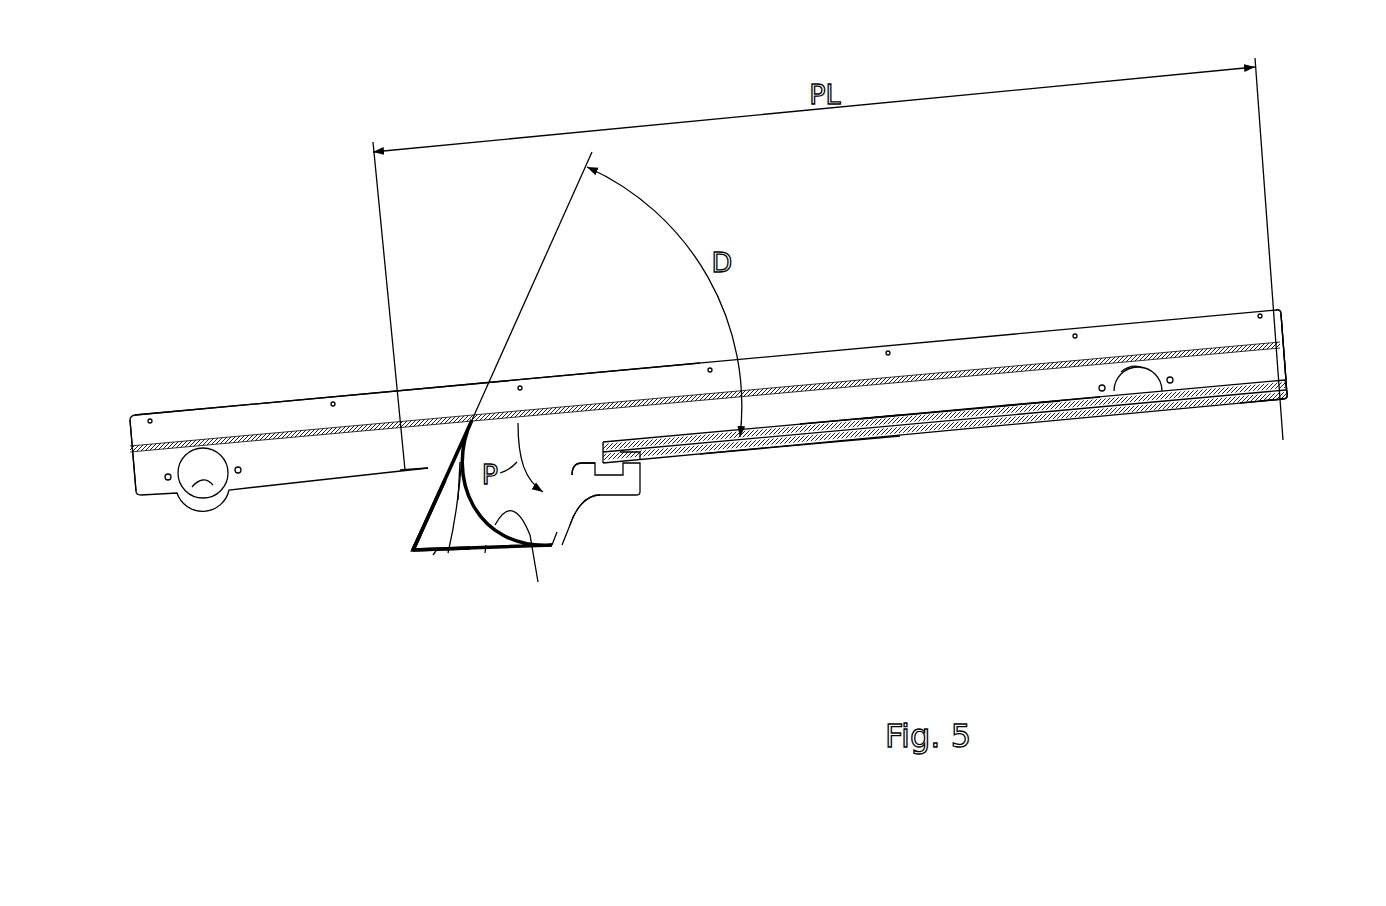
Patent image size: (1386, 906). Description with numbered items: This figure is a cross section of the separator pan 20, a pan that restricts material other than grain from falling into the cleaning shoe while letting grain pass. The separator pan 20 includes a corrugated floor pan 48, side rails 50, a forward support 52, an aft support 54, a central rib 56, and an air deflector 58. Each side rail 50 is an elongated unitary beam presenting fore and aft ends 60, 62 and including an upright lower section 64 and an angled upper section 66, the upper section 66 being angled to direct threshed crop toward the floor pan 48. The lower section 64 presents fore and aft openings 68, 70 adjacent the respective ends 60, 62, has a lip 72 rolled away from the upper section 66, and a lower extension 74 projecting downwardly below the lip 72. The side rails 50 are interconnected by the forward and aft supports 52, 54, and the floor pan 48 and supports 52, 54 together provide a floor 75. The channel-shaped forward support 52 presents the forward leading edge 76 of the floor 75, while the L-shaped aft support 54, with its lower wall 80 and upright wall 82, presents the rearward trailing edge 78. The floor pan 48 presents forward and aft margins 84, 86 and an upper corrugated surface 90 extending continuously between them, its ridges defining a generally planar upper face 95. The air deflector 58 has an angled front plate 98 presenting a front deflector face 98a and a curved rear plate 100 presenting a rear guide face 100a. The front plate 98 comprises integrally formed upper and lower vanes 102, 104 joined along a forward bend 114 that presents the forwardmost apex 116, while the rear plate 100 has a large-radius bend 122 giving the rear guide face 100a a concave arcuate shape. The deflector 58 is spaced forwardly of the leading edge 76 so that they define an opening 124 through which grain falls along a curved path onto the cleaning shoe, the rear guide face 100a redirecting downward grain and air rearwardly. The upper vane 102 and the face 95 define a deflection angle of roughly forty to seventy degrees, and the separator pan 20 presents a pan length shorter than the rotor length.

The separator pan 20 is at (1070, 171).
The corrugated floor pan 48 is at (948, 430).
The side rails 50 is at (770, 372).
The forward support 52 is at (618, 493).
The aft support 54 is at (1278, 400).
The central rib 56 is at (903, 420).
The air deflector 58 is at (420, 516).
The fore end 60 is at (128, 472).
The aft end 62 is at (1286, 323).
The upright lower section 64 is at (283, 457).
The angled upper section 66 is at (277, 412).
The fore opening 68 is at (205, 490).
The aft opening 70 is at (1137, 370).
The lip 72 is at (828, 445).
The lower extension 74 is at (552, 515).
The floor 75 is at (1035, 412).
The forward leading edge 76 is at (567, 512).
The rearward trailing edge 78 is at (1290, 360).
The lower wall 80 is at (1287, 400).
The upright wall 82 is at (1290, 378).
The forward margin 84 is at (583, 460).
The aft margin 86 is at (1283, 388).
The upper corrugated surface 90 is at (862, 427).
The upper face 95 is at (1000, 417).
The angled front plate 98 is at (448, 553).
The front deflector face 98a is at (485, 553).
The curved rear plate 100 is at (474, 418).
The rear guide face 100a is at (531, 562).
The upper vane 102 is at (424, 470).
The lower vane 104 is at (433, 555).
The forward bend 114 is at (435, 553).
The forwardmost apex 116 is at (403, 553).
The bend 122 is at (458, 500).
The opening 124 is at (538, 396).